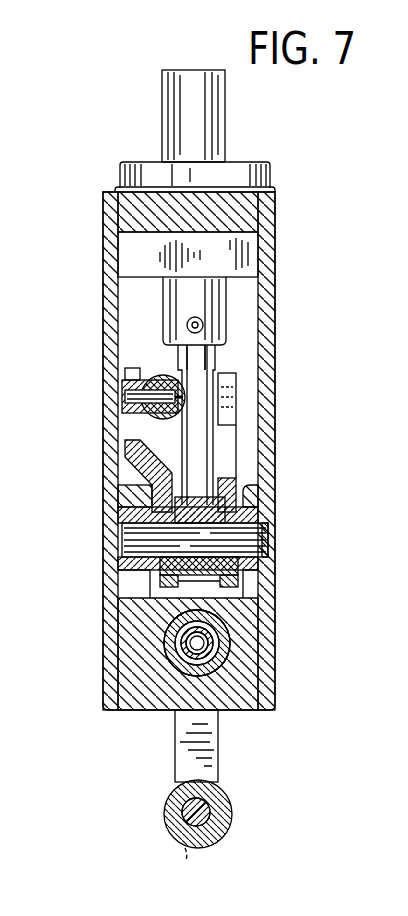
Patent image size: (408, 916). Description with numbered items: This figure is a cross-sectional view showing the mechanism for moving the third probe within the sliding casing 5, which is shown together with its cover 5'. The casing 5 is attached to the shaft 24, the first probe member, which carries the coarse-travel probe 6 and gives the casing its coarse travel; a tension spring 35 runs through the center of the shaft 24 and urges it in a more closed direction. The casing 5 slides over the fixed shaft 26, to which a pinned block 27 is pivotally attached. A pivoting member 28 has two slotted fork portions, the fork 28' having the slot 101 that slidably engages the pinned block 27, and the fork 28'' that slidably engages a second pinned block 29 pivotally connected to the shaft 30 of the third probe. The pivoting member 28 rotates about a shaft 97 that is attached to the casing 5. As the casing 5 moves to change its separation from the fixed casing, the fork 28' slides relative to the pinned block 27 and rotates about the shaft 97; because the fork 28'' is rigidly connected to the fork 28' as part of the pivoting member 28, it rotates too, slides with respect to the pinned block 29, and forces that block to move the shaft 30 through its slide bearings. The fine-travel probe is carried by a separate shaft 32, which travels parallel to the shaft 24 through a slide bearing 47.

The sliding casing 5 is at (215, 451).
The cover 5' is at (91, 451).
The slot 101 is at (126, 371).
The fixed shaft 26 is at (163, 375).
The pinned block 27 is at (122, 412).
The pinned block 29 is at (236, 379).
The fork portion 28' is at (105, 474).
The shaft 30 is at (200, 458).
The fork portion 28'' is at (278, 479).
The shaft 97 is at (258, 538).
The pivoting member 28 is at (253, 583).
The tension spring 35 is at (188, 642).
The shaft 24 is at (230, 645).
The shaft 32 is at (226, 804).
The slide bearing 47 is at (184, 812).
The probe 6 is at (184, 854).